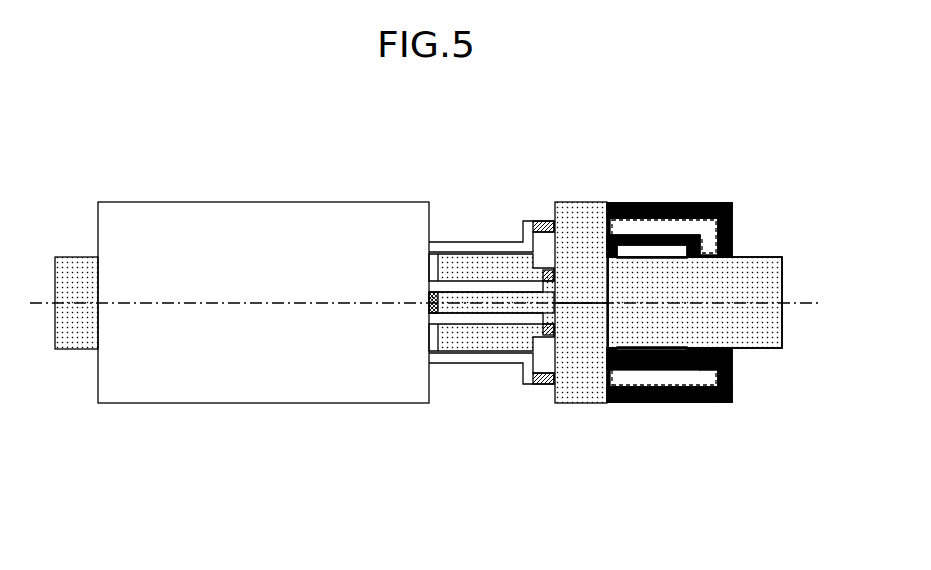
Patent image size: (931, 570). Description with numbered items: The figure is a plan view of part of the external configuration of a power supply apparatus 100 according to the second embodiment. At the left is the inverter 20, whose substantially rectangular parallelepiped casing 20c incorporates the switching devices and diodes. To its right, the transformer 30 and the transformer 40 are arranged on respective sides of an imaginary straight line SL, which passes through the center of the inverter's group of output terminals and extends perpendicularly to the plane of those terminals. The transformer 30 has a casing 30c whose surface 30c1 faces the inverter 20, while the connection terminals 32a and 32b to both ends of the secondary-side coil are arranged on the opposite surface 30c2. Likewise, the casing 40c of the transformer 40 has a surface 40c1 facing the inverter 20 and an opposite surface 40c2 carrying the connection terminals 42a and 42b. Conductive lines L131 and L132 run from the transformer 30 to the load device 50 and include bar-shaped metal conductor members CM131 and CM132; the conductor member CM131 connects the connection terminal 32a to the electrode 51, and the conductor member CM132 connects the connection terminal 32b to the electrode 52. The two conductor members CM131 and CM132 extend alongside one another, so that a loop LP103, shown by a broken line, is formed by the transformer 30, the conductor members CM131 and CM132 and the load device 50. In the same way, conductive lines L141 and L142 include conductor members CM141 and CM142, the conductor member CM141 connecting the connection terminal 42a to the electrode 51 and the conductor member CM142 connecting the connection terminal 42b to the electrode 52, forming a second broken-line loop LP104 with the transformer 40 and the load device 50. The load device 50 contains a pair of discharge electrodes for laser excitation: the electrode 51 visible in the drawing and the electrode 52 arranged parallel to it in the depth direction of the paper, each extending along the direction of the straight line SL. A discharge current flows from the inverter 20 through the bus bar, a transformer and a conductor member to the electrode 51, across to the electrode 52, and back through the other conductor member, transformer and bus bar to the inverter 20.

The power supply apparatus 100 is at (126, 137).
The inverter 20 is at (242, 366).
The casing 20c is at (255, 393).
The transformer 30 is at (587, 137).
The casing 30c is at (578, 202).
The surface 30c1 is at (552, 209).
The surface 30c2 is at (611, 254).
The connection terminal 32a is at (612, 202).
The connection terminal 32b is at (614, 247).
The conductive line L131 is at (708, 137).
The conductor member CM131 is at (694, 206).
The conductor member CM132 is at (660, 247).
The loop LP103 is at (720, 227).
The conductive line L132 is at (712, 287).
The transformer 40 is at (557, 466).
The casing 40c is at (567, 404).
The surface 40c1 is at (552, 398).
The surface 40c2 is at (611, 351).
The connection terminal 42a is at (614, 358).
The connection terminal 42b is at (613, 403).
The conductive line L141 is at (710, 323).
The conductive line L142 is at (708, 466).
The conductor member CM141 is at (660, 358).
The conductor member CM142 is at (694, 399).
The loop LP104 is at (612, 378).
The load device 50 is at (793, 404).
The electrode 51 is at (768, 349).
The electrode 52 is at (768, 349).
The straight line SL is at (796, 300).